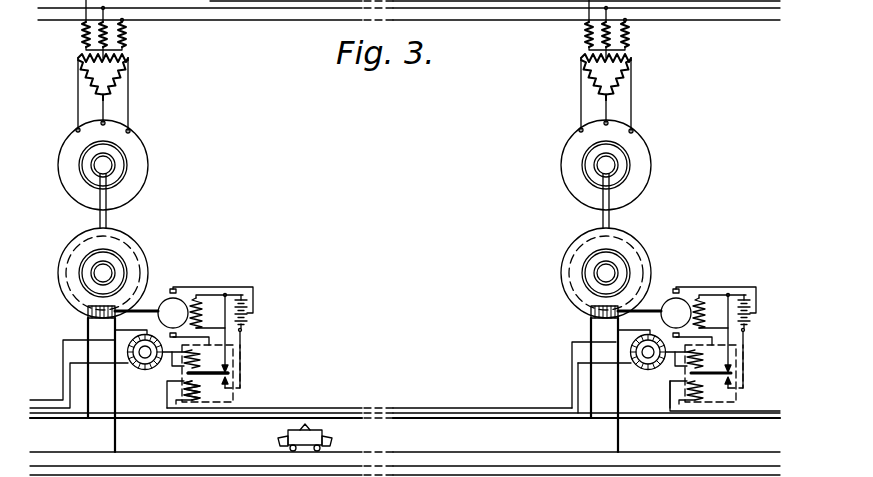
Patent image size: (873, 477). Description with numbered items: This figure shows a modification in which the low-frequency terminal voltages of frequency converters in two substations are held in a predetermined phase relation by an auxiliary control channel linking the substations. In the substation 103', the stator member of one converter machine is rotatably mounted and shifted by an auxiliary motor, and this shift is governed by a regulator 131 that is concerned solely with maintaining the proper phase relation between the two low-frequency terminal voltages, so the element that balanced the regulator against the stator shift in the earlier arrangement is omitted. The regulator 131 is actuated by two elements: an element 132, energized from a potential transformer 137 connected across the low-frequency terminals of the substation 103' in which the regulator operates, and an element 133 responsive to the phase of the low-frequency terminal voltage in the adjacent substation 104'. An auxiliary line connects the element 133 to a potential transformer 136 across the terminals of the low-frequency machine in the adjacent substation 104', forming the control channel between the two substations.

The substation 103' is at (118, 112).
The adjacent substation 104' is at (619, 112).
The regulator 131 is at (232, 352).
The element 132 is at (228, 367).
The element 133 is at (201, 402).
The potential transformer 136 is at (657, 372).
The potential transformer 137 is at (155, 372).